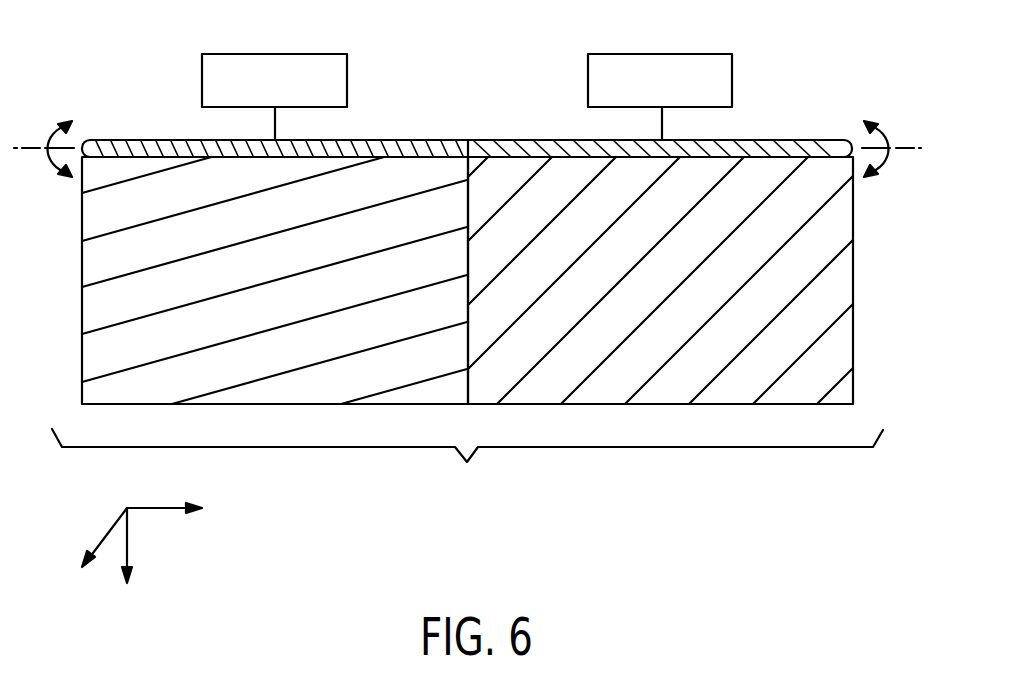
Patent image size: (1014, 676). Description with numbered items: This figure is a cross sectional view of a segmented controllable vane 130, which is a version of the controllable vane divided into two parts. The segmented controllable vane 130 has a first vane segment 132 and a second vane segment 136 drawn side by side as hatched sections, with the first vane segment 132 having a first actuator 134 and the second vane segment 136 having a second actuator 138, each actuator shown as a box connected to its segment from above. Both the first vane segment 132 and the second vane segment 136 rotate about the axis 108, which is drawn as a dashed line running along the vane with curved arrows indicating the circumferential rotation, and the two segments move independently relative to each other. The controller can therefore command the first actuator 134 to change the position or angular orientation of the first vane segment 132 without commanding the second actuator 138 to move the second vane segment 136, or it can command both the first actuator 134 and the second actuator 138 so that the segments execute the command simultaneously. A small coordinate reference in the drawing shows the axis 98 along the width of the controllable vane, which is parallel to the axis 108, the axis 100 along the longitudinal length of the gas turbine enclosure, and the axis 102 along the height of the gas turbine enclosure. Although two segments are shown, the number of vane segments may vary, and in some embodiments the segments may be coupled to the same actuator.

The segmented controllable vane 130 is at (467, 318).
The first vane segment 132 is at (277, 404).
The second vane segment 136 is at (667, 404).
The first actuator 134 is at (273, 53).
The second actuator 138 is at (660, 53).
The axis 108 is at (893, 148).
The axis 98 is at (155, 507).
The axis 100 is at (108, 531).
The axis 102 is at (128, 538).